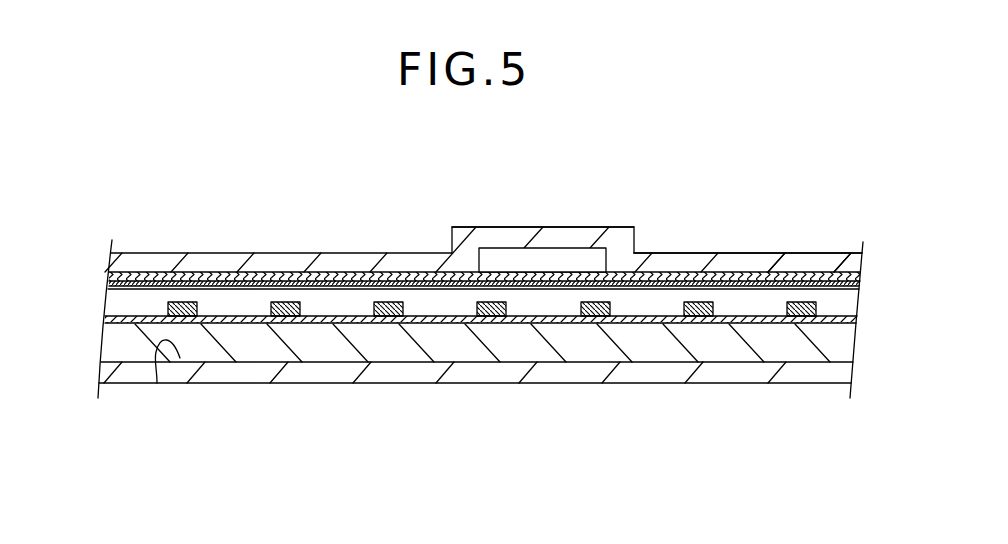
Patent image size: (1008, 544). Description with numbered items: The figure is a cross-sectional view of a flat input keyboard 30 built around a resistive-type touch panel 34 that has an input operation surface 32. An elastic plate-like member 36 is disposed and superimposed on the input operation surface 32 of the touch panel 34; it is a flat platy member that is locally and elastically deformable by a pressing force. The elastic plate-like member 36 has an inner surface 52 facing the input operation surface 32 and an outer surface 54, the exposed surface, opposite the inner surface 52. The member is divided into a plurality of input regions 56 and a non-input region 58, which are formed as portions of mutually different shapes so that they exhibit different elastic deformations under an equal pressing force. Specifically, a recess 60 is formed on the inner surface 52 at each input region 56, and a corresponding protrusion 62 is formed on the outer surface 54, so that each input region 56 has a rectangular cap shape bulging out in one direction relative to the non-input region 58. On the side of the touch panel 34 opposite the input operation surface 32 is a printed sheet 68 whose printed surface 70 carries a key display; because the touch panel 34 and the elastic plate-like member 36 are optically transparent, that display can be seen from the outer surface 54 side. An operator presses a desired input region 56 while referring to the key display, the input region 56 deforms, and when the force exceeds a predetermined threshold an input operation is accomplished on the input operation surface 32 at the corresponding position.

The flat input keyboard 30 is at (690, 200).
The input operation surface 32 is at (818, 253).
The resistive-type touch panel 34 is at (650, 368).
The elastic plate-like member 36 is at (750, 240).
The inner surface 52 is at (140, 288).
The outer surface 54 is at (218, 252).
The input region 56 is at (557, 224).
The non-input region 58 is at (357, 249).
The recess 60 is at (569, 255).
The protrusion 62 is at (500, 227).
The printed sheet 68 is at (262, 390).
The printed surface 70 is at (157, 383).